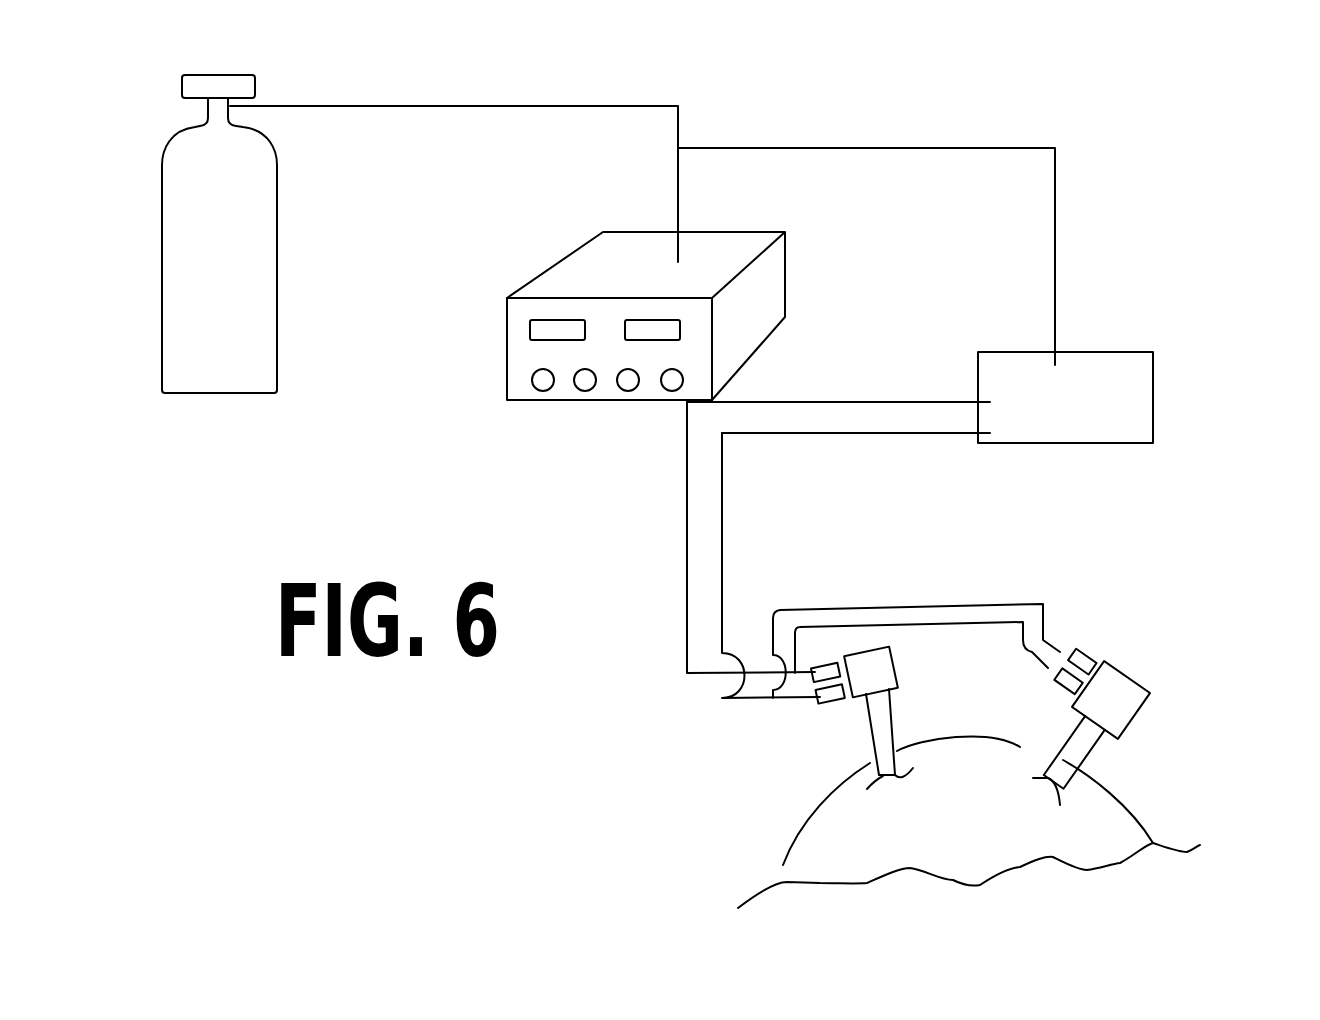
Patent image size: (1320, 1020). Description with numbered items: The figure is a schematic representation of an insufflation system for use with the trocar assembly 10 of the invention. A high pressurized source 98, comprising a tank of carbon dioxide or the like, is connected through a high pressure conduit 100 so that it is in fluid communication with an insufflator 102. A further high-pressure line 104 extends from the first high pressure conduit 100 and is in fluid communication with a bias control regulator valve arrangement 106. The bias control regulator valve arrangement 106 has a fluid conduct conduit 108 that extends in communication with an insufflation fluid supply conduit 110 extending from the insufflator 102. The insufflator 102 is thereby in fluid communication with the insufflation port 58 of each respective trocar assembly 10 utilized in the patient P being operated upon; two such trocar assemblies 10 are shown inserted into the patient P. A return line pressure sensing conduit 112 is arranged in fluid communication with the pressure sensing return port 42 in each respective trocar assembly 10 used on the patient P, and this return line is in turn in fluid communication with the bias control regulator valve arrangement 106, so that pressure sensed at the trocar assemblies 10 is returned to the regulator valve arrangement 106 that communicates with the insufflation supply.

The high pressurized source 98 is at (258, 238).
The high pressure conduit 100 is at (538, 105).
The insufflator 102 is at (550, 266).
The further high-pressure line 104 is at (1058, 186).
The bias control regulator valve arrangement 106 is at (1150, 368).
The fluid conduct conduit 108 is at (906, 406).
The insufflation fluid supply conduit 110 is at (686, 538).
The return line pressure sensing conduit 112 is at (723, 578).
The trocar assembly 10 is at (903, 655).
The insufflation port 58 is at (835, 665).
The pressure sensing return port 42 is at (833, 700).
The patient P is at (1107, 803).